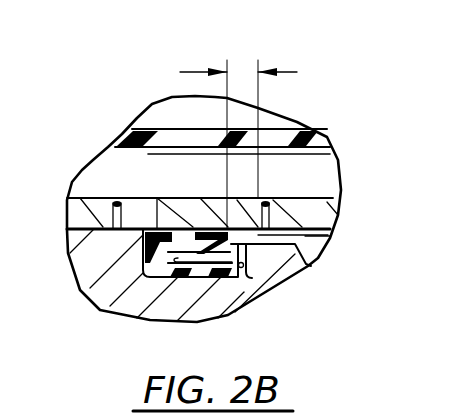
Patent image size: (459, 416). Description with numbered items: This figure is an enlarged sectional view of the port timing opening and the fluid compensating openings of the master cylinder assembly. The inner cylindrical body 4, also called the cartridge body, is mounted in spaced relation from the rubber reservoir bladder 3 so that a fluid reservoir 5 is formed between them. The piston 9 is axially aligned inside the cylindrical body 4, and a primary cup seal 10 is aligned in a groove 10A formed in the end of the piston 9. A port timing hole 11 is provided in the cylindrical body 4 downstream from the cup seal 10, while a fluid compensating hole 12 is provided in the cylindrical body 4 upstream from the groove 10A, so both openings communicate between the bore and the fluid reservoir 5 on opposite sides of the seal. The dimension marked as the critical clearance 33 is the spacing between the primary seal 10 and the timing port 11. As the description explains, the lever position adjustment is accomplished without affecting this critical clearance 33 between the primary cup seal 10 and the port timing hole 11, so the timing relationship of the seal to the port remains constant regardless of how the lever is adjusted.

The rubber reservoir bladder 3 is at (277, 137).
The critical clearance 33 is at (240, 73).
The fluid reservoir 5 is at (188, 184).
The inner cylindrical body 4 is at (318, 215).
The fluid compensating hole 12 is at (118, 198).
The port timing hole 11 is at (265, 200).
The piston 9 is at (88, 271).
The primary cup seal 10 is at (137, 316).
The groove 10A is at (246, 272).